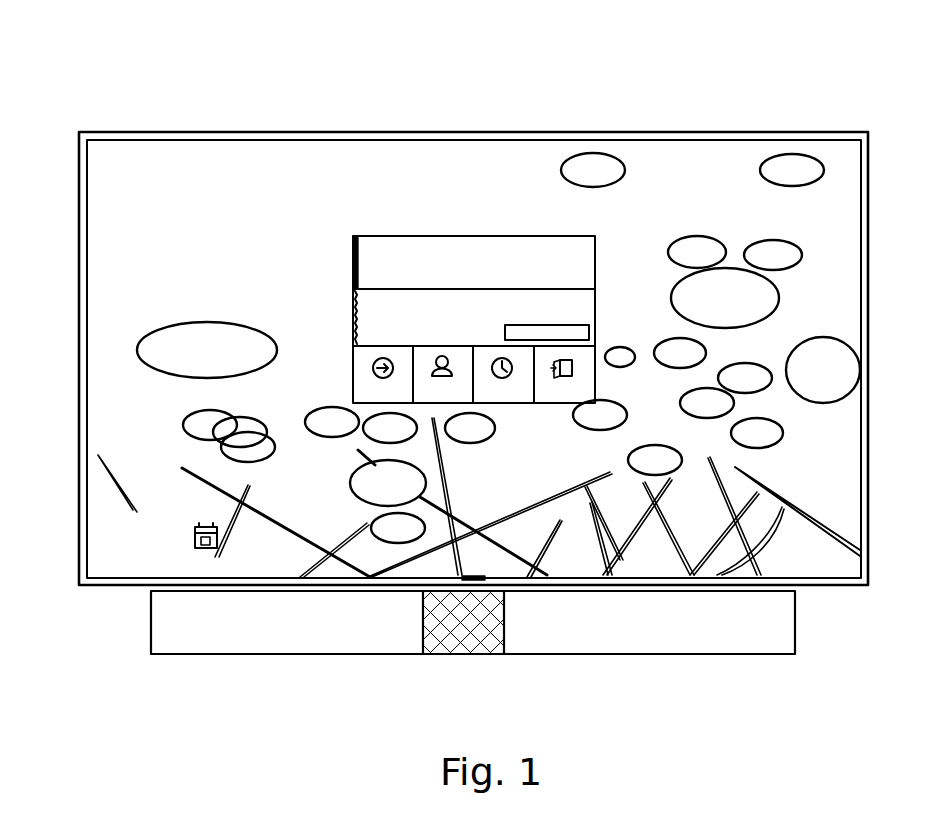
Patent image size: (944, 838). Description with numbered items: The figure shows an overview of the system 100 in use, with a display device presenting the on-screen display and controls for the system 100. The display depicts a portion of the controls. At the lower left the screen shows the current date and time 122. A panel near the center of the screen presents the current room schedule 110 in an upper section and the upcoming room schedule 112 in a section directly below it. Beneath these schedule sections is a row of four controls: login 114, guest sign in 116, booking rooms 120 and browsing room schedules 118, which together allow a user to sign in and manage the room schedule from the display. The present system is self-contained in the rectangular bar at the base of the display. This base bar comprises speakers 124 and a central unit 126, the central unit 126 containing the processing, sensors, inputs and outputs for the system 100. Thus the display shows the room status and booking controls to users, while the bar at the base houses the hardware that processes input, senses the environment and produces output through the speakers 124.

The conference room display system 100 is at (155, 88).
The current room schedule 110 is at (457, 250).
The upcoming room schedule 112 is at (580, 297).
The login 114 is at (365, 371).
The guest sign in 116 is at (460, 404).
The browsing room schedules 118 is at (580, 372).
The booking rooms 120 is at (530, 404).
The current date and time 122 is at (95, 564).
The speakers 124 is at (308, 643).
The central unit 126 is at (472, 651).